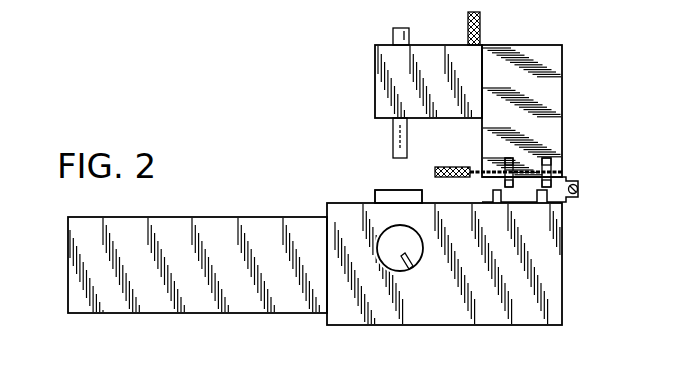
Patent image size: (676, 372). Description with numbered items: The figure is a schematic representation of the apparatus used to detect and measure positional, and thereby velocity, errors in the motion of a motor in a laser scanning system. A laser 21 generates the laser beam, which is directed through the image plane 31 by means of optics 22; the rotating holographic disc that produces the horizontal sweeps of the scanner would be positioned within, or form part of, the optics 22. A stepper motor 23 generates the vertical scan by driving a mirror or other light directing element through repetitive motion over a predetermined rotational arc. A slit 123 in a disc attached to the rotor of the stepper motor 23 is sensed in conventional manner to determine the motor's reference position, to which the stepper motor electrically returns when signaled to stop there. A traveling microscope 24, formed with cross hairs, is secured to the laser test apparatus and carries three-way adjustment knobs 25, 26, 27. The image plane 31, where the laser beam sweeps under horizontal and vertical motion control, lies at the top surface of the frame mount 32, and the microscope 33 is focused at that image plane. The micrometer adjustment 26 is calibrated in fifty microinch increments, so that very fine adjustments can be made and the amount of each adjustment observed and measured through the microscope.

The laser 21 is at (207, 228).
The optics 22 is at (340, 212).
The stepper motor 23 is at (397, 269).
The slit 123 is at (412, 260).
The traveling microscope 24 is at (357, 90).
The adjustment knob 25 is at (481, 14).
The micrometer adjustment 26 is at (466, 167).
The adjustment knob 27 is at (578, 189).
The image plane 31 is at (393, 190).
The frame mount 32 is at (375, 188).
The microscope 33 is at (399, 28).